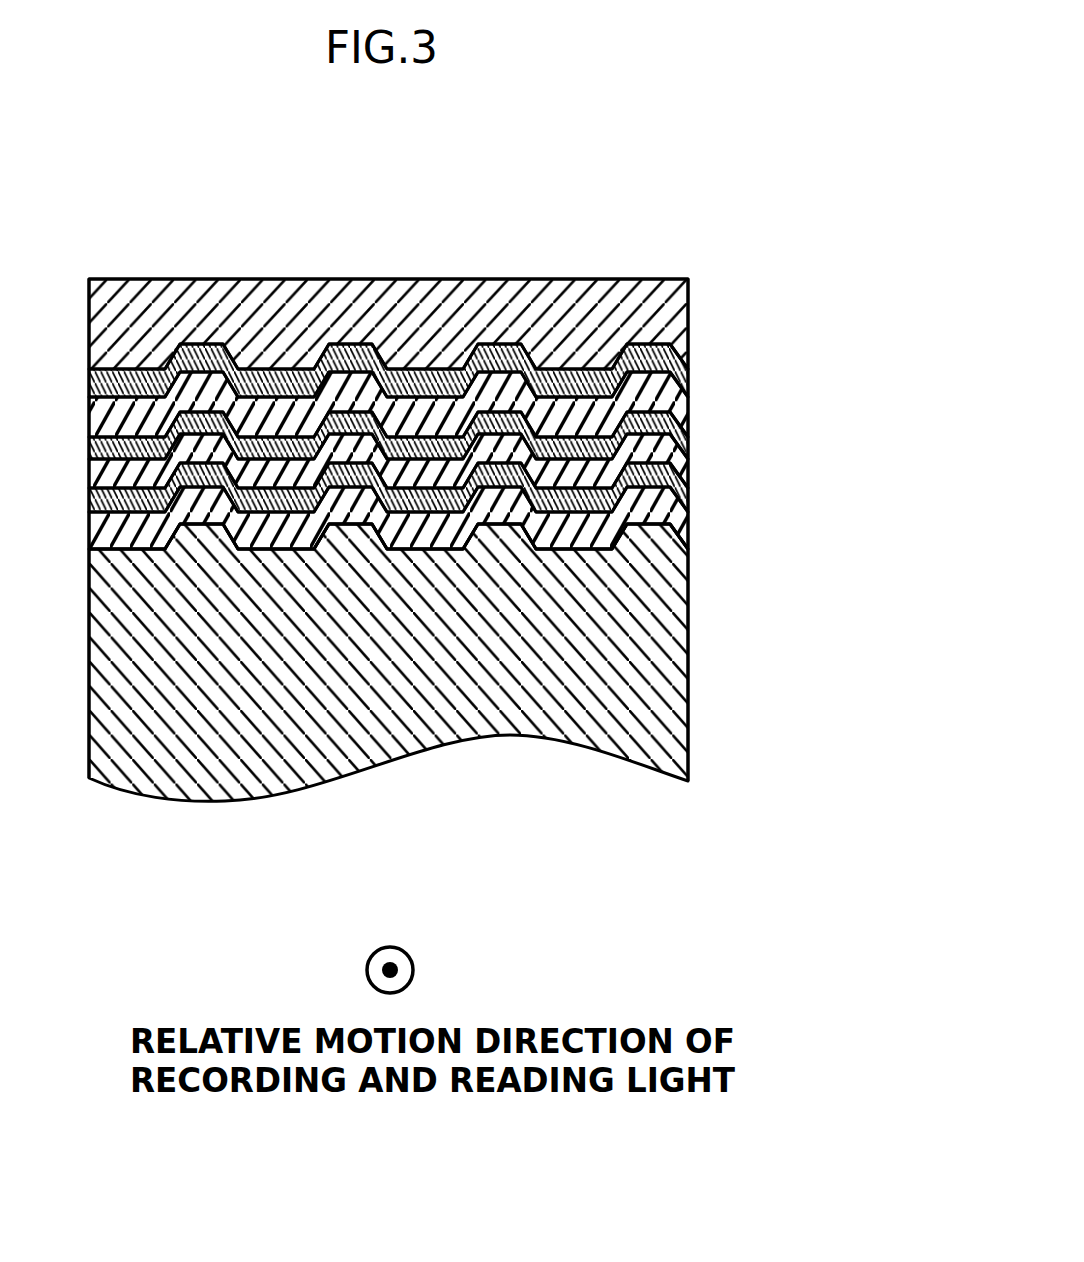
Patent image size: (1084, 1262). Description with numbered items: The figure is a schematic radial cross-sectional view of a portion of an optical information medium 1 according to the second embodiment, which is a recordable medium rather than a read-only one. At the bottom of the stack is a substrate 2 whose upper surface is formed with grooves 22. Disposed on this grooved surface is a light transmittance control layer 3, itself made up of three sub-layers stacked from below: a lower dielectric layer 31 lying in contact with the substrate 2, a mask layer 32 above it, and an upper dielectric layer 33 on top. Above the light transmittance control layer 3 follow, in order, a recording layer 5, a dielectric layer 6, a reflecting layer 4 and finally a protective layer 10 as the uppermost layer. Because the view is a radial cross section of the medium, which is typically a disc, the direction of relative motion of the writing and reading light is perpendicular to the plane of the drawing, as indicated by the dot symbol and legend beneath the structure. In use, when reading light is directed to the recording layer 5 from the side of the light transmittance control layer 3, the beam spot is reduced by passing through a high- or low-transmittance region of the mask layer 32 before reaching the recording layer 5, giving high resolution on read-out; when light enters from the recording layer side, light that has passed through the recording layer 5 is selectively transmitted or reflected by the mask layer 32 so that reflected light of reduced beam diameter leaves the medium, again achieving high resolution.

The optical information medium 1 is at (755, 784).
The substrate 2 is at (688, 702).
The grooves 22 is at (568, 551).
The light transmittance control layer 3 is at (520, 508).
The lower dielectric layer 31 is at (479, 539).
The mask layer 32 is at (688, 500).
The upper dielectric layer 33 is at (688, 472).
The recording layer 5 is at (688, 440).
The dielectric layer 6 is at (688, 408).
The reflecting layer 4 is at (688, 370).
The protective layer 10 is at (688, 302).